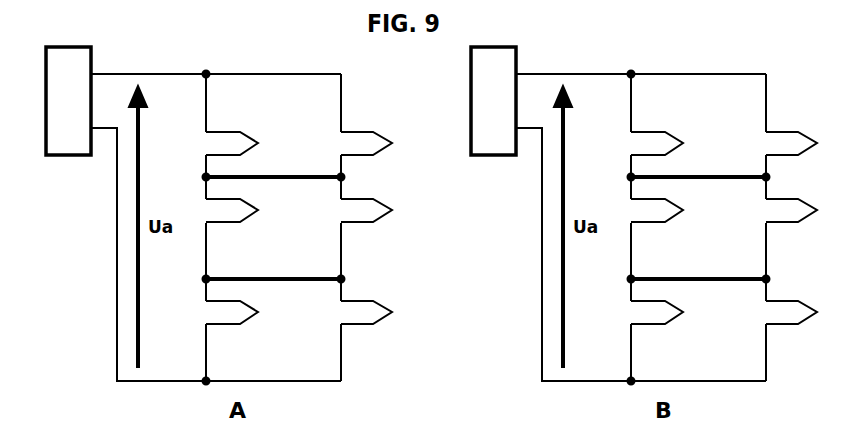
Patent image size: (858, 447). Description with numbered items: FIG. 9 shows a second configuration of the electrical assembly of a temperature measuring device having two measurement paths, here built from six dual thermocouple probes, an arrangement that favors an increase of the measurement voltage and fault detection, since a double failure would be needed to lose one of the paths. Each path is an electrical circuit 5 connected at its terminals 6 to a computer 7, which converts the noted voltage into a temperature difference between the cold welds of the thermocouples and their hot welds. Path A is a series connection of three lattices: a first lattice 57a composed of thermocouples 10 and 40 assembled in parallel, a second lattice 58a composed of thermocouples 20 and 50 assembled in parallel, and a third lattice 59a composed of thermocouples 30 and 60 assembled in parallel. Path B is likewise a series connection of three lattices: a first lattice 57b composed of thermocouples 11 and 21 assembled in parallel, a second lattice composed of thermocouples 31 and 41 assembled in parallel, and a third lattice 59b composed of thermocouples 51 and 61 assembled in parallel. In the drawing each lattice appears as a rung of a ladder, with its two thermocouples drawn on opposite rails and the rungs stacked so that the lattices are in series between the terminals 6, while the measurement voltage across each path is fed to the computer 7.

The electrical circuit 5 is at (242, 38).
The terminals 6 is at (162, 73).
The computer 7 is at (63, 109).
The first lattice 57a is at (278, 102).
The first lattice 57b is at (703, 102).
The second lattice 58a is at (320, 243).
The third lattice 59a is at (277, 354).
The third lattice 59b is at (702, 354).
The thermocouple 10 is at (244, 143).
The thermocouple 20 is at (244, 210).
The thermocouple 30 is at (244, 312).
The thermocouple 40 is at (379, 143).
The thermocouple 50 is at (379, 210).
The thermocouple 60 is at (379, 312).
The thermocouple 11 is at (669, 143).
The thermocouple 21 is at (804, 143).
The thermocouple 31 is at (669, 210).
The thermocouple 41 is at (804, 210).
The thermocouple 51 is at (669, 312).
The thermocouple 61 is at (804, 312).